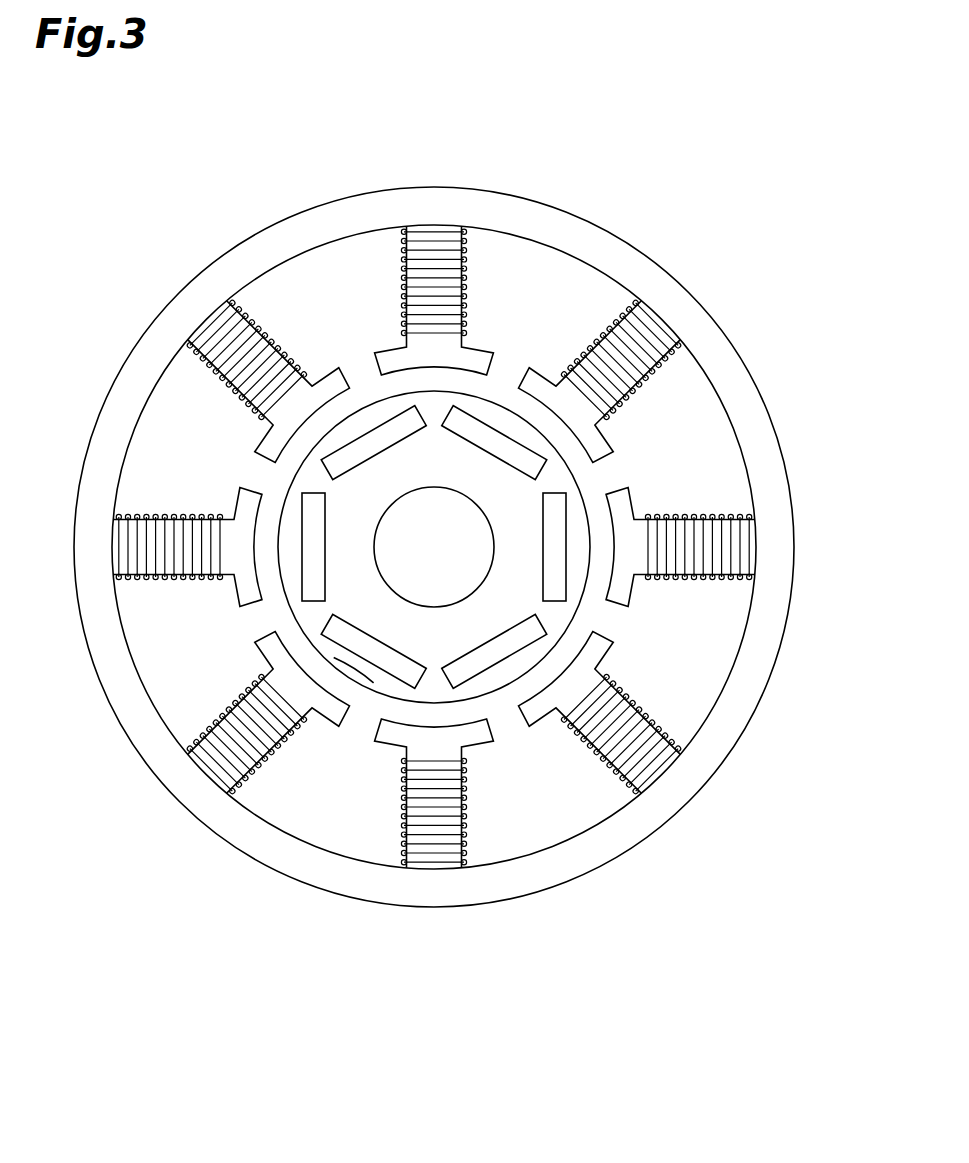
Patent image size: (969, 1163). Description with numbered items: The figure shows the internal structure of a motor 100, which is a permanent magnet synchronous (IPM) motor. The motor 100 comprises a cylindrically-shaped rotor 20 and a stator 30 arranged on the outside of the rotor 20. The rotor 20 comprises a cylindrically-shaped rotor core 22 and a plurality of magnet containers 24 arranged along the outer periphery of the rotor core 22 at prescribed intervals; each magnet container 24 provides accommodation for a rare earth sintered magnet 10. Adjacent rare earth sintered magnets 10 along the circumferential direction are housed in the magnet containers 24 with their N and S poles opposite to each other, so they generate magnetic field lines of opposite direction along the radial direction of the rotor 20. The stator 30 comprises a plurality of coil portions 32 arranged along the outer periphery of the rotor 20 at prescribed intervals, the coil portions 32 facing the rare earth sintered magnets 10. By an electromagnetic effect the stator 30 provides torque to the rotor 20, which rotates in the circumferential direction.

The motor 100 is at (624, 128).
The stator 30 is at (732, 332).
The coil portions 32 is at (445, 228).
The rotor 20 is at (574, 944).
The rotor core 22 is at (430, 700).
The magnet containers 24 is at (377, 672).
The rare earth sintered magnet 10 is at (490, 655).